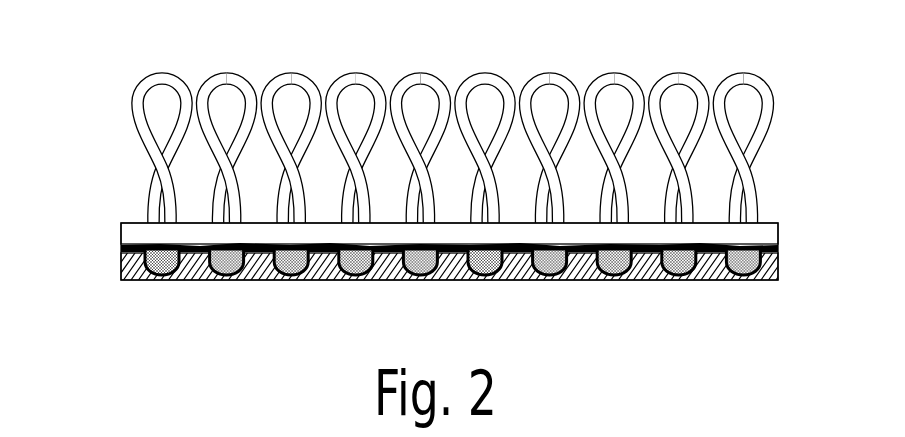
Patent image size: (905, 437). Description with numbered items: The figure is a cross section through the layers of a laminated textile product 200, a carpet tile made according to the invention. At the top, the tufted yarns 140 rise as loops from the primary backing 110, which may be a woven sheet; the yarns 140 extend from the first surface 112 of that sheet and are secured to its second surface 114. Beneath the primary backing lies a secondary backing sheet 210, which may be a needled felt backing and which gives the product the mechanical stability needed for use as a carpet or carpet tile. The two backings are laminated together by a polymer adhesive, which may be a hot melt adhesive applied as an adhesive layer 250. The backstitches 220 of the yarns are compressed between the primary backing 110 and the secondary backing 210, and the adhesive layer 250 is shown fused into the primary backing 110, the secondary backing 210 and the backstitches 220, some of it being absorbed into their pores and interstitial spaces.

The laminated textile product 200 is at (438, 180).
The yarns 140 is at (225, 82).
The primary backing 110 is at (411, 251).
The first surface 112 is at (133, 222).
The second surface 114 is at (120, 257).
The secondary backing sheet 210 is at (416, 297).
The backstitches 220 is at (347, 280).
The adhesive layer 250 is at (602, 280).